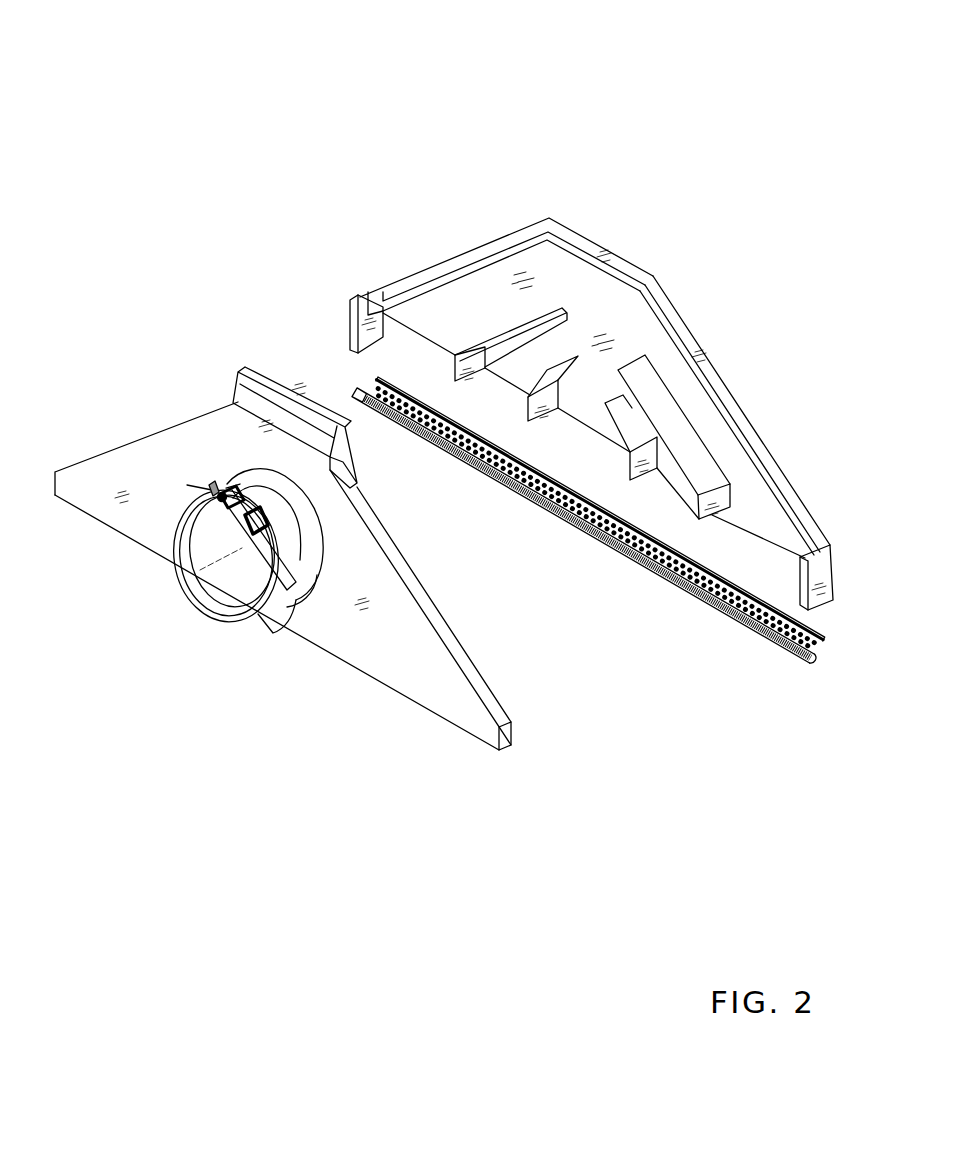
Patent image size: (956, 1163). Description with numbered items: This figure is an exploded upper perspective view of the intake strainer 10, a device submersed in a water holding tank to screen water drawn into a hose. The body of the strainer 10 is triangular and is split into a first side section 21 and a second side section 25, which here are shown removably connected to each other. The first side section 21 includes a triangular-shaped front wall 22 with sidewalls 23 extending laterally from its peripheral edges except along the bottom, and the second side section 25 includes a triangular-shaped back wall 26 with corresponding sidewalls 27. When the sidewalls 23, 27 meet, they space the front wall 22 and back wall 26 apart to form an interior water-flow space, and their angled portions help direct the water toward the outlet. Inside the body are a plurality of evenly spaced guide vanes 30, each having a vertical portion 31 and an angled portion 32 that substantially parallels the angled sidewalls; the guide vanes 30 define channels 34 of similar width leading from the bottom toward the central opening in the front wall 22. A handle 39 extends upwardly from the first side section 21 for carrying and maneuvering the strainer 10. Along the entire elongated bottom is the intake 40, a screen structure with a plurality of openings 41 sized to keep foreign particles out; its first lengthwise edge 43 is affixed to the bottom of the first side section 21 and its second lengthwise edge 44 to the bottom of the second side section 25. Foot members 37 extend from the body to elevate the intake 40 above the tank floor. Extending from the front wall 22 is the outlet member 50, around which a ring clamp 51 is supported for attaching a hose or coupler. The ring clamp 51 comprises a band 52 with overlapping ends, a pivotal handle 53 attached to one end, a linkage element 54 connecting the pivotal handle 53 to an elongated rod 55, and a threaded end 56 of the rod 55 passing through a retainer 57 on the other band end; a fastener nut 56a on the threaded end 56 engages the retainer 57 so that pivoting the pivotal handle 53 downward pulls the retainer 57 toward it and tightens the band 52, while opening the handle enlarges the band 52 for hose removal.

The intake strainer 10 is at (200, 80).
The first side section 21 is at (392, 697).
The front wall 22 is at (350, 638).
The sidewalls 23 is at (398, 552).
The second side section 25 is at (570, 218).
The back wall 26 is at (573, 280).
The sidewalls 27 is at (673, 318).
The guide vanes 30 is at (698, 426).
The vertical portion 31 is at (723, 500).
The angled portion 32 is at (652, 393).
The channels 34 is at (760, 508).
The foot members 37 is at (352, 312).
The handle 39 is at (255, 377).
The intake 40 is at (642, 572).
The openings 41 is at (825, 657).
The first lengthwise edge 43 is at (470, 455).
The second lengthwise edge 44 is at (497, 435).
The outlet member 50 is at (215, 487).
The ring clamp 51 is at (163, 635).
The band 52 is at (187, 485).
The pivotal handle 53 is at (287, 610).
The linkage element 54 is at (316, 556).
The elongated rod 55 is at (243, 517).
The threaded end 56 is at (213, 487).
The fastener nut 56a is at (212, 487).
The retainer 57 is at (218, 488).